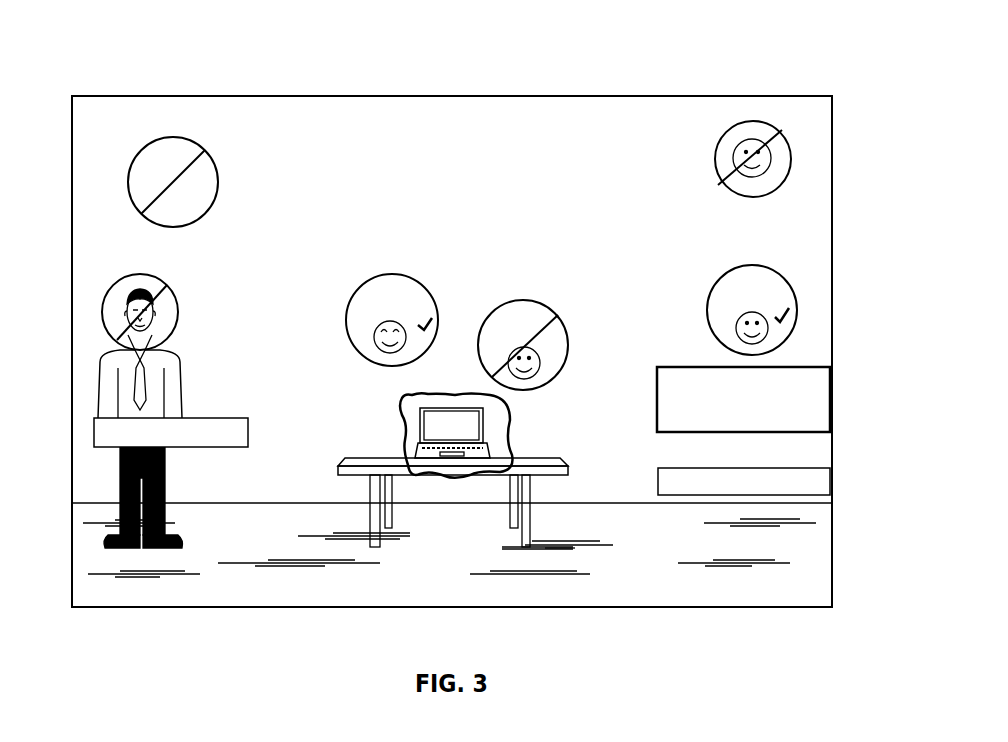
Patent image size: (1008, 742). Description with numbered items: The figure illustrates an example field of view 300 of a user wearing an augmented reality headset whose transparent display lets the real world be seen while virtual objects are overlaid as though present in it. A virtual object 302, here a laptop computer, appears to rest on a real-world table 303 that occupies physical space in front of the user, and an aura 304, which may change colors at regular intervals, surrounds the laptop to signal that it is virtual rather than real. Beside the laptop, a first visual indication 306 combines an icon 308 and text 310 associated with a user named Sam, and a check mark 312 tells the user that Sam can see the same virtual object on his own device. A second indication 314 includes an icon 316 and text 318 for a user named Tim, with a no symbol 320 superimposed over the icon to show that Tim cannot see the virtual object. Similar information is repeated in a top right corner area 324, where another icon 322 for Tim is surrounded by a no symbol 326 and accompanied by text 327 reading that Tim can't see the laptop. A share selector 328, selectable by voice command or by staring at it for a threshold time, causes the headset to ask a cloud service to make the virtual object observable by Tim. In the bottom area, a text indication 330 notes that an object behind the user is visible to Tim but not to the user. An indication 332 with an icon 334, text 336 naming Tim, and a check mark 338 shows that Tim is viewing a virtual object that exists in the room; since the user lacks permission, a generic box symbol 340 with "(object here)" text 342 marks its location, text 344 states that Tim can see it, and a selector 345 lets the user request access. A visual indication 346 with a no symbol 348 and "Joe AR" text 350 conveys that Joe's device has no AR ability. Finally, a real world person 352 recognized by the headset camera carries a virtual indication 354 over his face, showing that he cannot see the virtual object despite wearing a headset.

The field of view 300 is at (752, 75).
The virtual object 302 is at (485, 438).
The real-world table 303 is at (557, 477).
The aura 304 is at (397, 442).
The first visual indication 306 is at (394, 301).
The icon 308 is at (377, 342).
The text 310 is at (367, 300).
The check mark 312 is at (435, 327).
The second indication 314 is at (549, 336).
The icon 316 is at (533, 373).
The text 318 is at (513, 320).
The no symbol 320 is at (545, 328).
The icon 322 is at (722, 178).
The top right corner area 324 is at (792, 152).
The no symbol 326 is at (777, 156).
The text 327 is at (530, 121).
The share selector 328 is at (227, 447).
The text indication 330 is at (437, 583).
The indication 332 is at (732, 303).
The icon 334 is at (735, 328).
The text 336 is at (773, 295).
The check mark 338 is at (780, 323).
The generic box symbol 340 is at (741, 391).
The "(object here)" text 342 is at (675, 402).
The text 344 is at (798, 453).
The selector 345 is at (658, 478).
The visual indication 346 is at (196, 186).
The no symbol 348 is at (148, 212).
The "Joe AR" text 350 is at (187, 200).
The real world person 352 is at (167, 411).
The virtual indication 354 is at (180, 303).